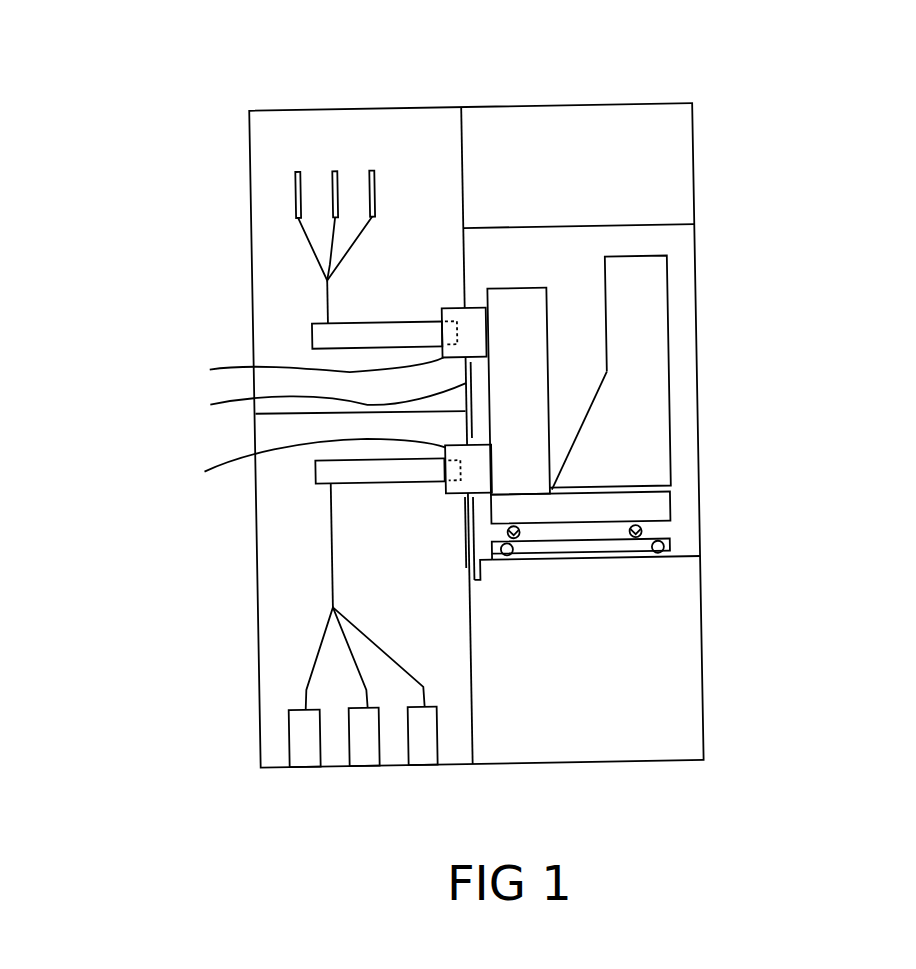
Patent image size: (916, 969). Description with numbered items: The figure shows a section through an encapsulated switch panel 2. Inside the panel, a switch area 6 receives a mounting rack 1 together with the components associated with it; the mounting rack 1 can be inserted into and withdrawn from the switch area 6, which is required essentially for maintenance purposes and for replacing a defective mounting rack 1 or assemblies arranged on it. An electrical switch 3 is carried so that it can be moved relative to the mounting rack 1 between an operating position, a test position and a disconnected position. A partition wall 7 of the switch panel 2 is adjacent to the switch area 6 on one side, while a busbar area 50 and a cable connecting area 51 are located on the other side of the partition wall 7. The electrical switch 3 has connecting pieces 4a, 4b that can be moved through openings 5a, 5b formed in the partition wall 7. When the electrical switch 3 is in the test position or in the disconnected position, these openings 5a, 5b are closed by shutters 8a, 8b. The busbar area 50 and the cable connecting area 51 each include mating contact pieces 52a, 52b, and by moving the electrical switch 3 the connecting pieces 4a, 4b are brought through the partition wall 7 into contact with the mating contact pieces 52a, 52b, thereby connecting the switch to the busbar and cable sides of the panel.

The mounting rack 1 is at (675, 541).
The switch panel 2 is at (747, 212).
The electrical switch 3 is at (669, 470).
The connecting piece 4a is at (304, 368).
The connecting piece 4b is at (306, 471).
The opening 5a is at (454, 301).
The opening 5b is at (451, 500).
The switch area 6 is at (684, 251).
The partition wall 7 is at (468, 266).
The shutter 8a is at (318, 402).
The shutter 8b is at (468, 537).
The busbar area 50 is at (414, 145).
The cable connecting area 51 is at (280, 611).
The mating contact piece 52a is at (444, 348).
The mating contact piece 52b is at (442, 458).